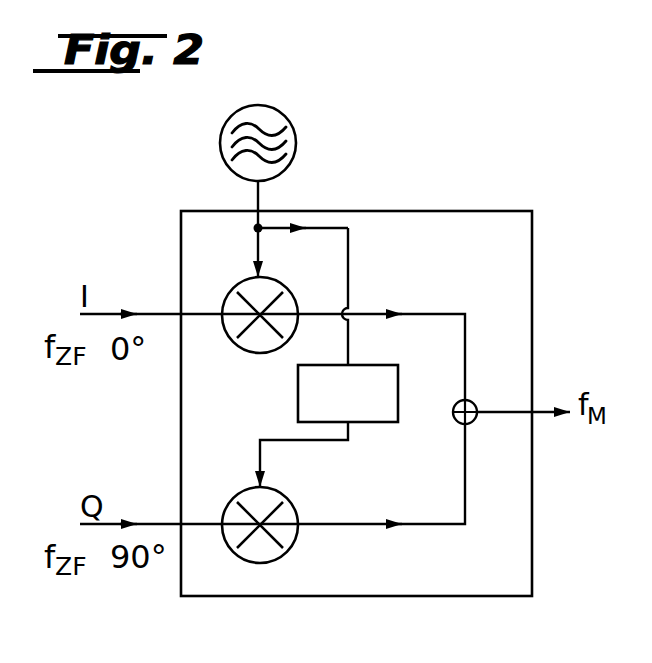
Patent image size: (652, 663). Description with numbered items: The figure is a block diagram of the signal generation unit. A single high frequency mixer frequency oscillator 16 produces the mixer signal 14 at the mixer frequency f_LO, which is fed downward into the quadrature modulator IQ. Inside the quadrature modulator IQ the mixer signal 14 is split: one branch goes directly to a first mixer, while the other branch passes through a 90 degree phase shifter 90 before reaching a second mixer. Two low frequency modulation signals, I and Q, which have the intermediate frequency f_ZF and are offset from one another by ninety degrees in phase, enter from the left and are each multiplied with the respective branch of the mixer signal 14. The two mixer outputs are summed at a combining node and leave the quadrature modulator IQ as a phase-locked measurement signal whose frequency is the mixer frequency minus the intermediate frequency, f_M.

The mixer signal 14 is at (260, 198).
The high frequency mixer frequency oscillator 16 is at (227, 170).
The quadrature modulator IQ is at (356, 403).
The 90° phase shifter 90 is at (348, 393).